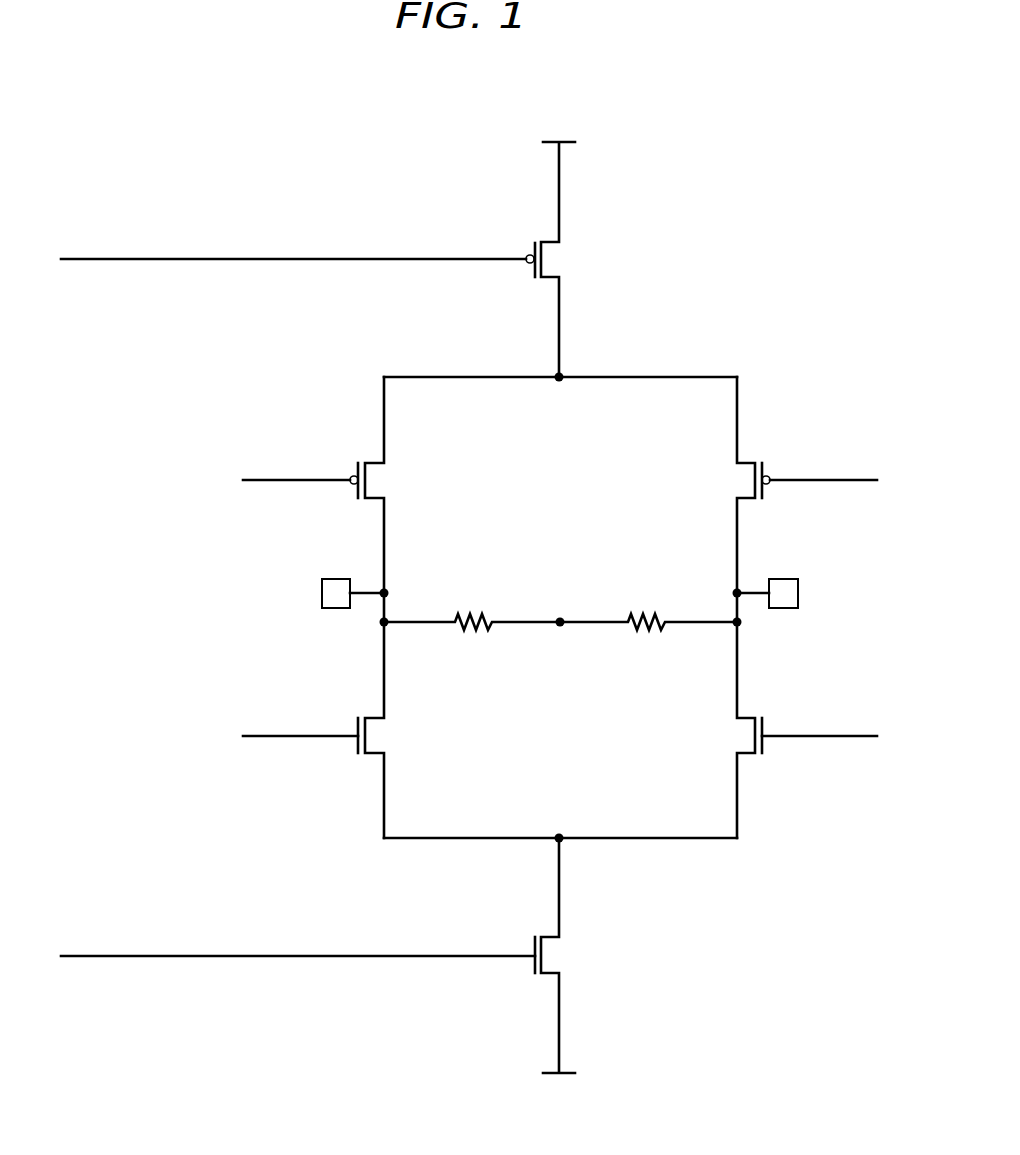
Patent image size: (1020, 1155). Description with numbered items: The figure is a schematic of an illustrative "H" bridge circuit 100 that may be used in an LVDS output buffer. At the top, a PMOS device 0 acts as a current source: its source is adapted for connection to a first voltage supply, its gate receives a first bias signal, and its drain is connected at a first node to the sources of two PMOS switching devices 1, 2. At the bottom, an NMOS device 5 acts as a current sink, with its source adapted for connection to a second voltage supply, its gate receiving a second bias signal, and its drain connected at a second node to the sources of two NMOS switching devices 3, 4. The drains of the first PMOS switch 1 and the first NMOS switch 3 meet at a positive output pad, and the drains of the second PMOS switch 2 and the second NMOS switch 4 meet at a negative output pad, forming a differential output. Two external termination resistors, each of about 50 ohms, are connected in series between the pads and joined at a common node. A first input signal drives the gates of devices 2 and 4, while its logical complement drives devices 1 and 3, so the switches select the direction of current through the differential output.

The "H" bridge circuit 100 is at (698, 285).
The termination resistor resistance 50 is at (560, 609).
The PMOS device M0 0 is at (324, 246).
The PMOS device M1 1 is at (326, 499).
The PMOS device M2 2 is at (792, 499).
The NMOS device M3 3 is at (326, 730).
The NMOS device M4 4 is at (792, 730).
The NMOS device M5 5 is at (323, 969).